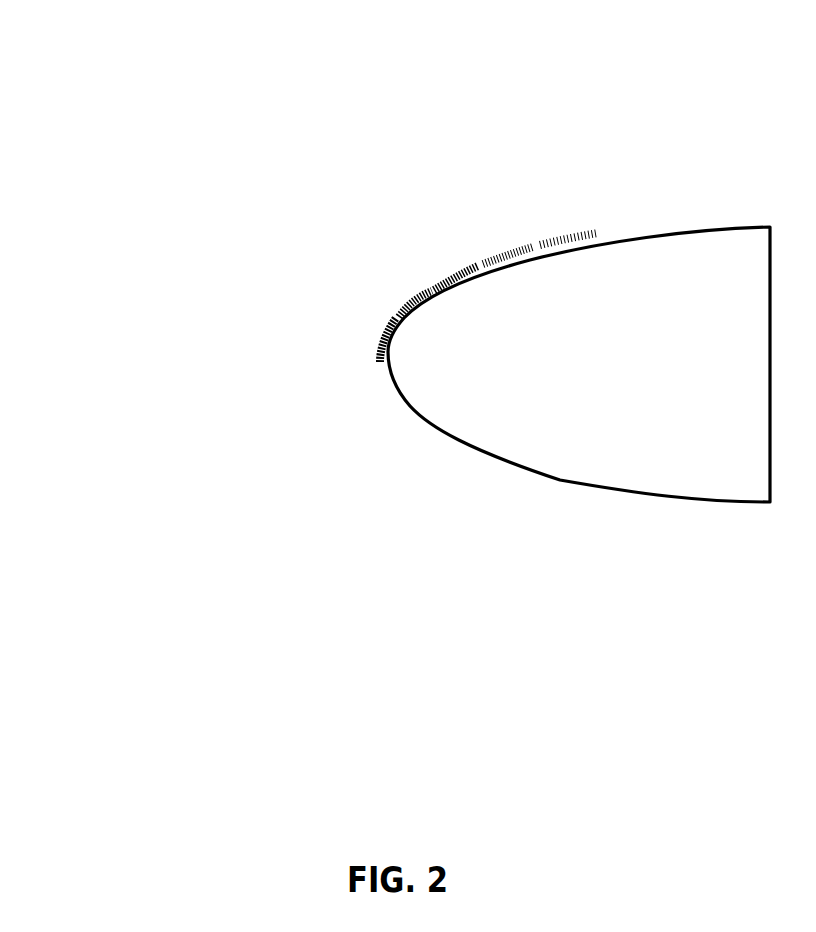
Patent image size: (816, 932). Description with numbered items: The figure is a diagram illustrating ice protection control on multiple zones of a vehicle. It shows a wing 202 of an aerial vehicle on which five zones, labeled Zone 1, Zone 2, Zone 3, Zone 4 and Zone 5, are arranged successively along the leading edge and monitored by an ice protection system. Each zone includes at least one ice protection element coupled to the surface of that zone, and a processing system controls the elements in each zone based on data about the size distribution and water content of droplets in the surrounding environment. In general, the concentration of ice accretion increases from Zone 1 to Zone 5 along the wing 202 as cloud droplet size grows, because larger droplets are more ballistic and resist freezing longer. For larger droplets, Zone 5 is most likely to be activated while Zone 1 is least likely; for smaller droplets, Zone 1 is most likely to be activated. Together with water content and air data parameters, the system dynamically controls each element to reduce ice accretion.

The wing 202 is at (579, 364).
The Zone 1 is at (362, 331).
The Zone 2 is at (390, 288).
The Zone 3 is at (437, 266).
The Zone 4 is at (497, 230).
The Zone 5 is at (575, 217).